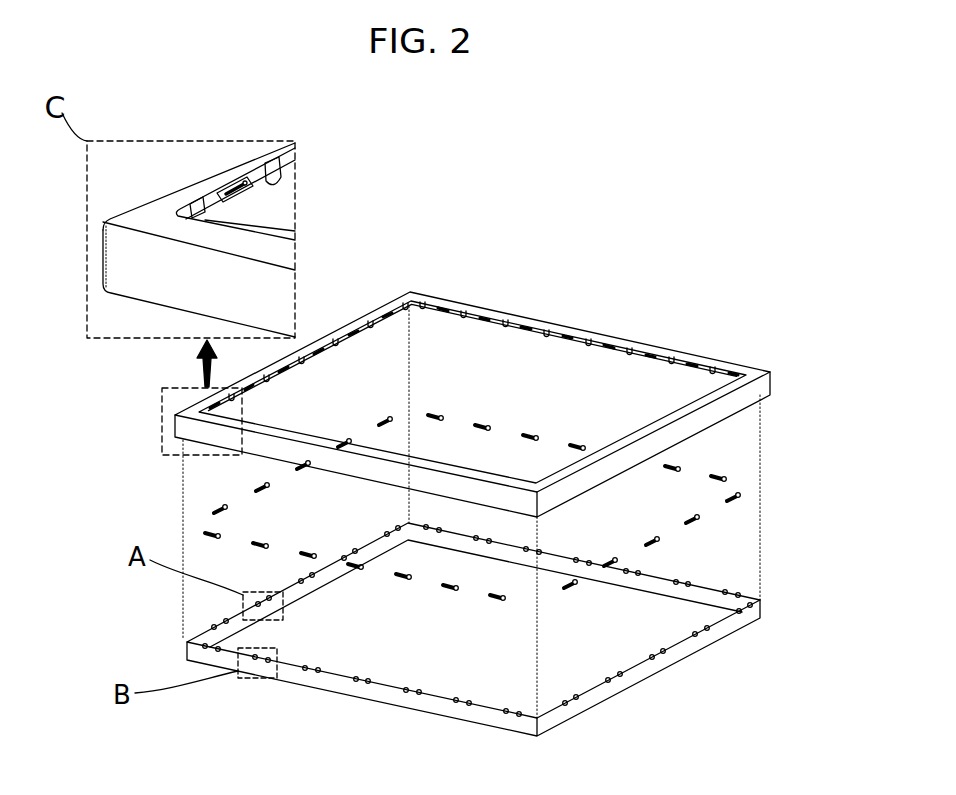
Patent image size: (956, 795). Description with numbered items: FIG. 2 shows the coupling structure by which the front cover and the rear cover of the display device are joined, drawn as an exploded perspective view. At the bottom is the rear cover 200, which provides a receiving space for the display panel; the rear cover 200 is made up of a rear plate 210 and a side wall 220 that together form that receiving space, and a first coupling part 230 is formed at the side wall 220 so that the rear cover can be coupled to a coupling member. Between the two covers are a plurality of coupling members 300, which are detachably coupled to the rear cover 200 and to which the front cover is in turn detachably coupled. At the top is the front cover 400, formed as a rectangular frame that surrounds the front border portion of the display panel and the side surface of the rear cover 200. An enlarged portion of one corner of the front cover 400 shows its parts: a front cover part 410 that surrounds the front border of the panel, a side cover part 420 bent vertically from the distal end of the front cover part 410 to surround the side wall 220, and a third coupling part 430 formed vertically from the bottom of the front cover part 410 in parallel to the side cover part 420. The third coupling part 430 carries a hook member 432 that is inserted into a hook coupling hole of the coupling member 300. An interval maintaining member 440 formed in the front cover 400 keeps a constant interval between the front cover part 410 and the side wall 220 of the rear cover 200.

The rear cover 200 is at (473, 631).
The rear plate 210 is at (633, 657).
The side wall 220 is at (600, 698).
The first coupling part 230 is at (658, 727).
The coupling member 300 is at (535, 437).
The front cover 400 is at (592, 328).
The front cover part 410 is at (190, 180).
The side cover part 420 is at (140, 282).
The third coupling part 430 is at (243, 190).
The hook member 432 is at (238, 176).
The interval maintaining member 440 is at (280, 171).